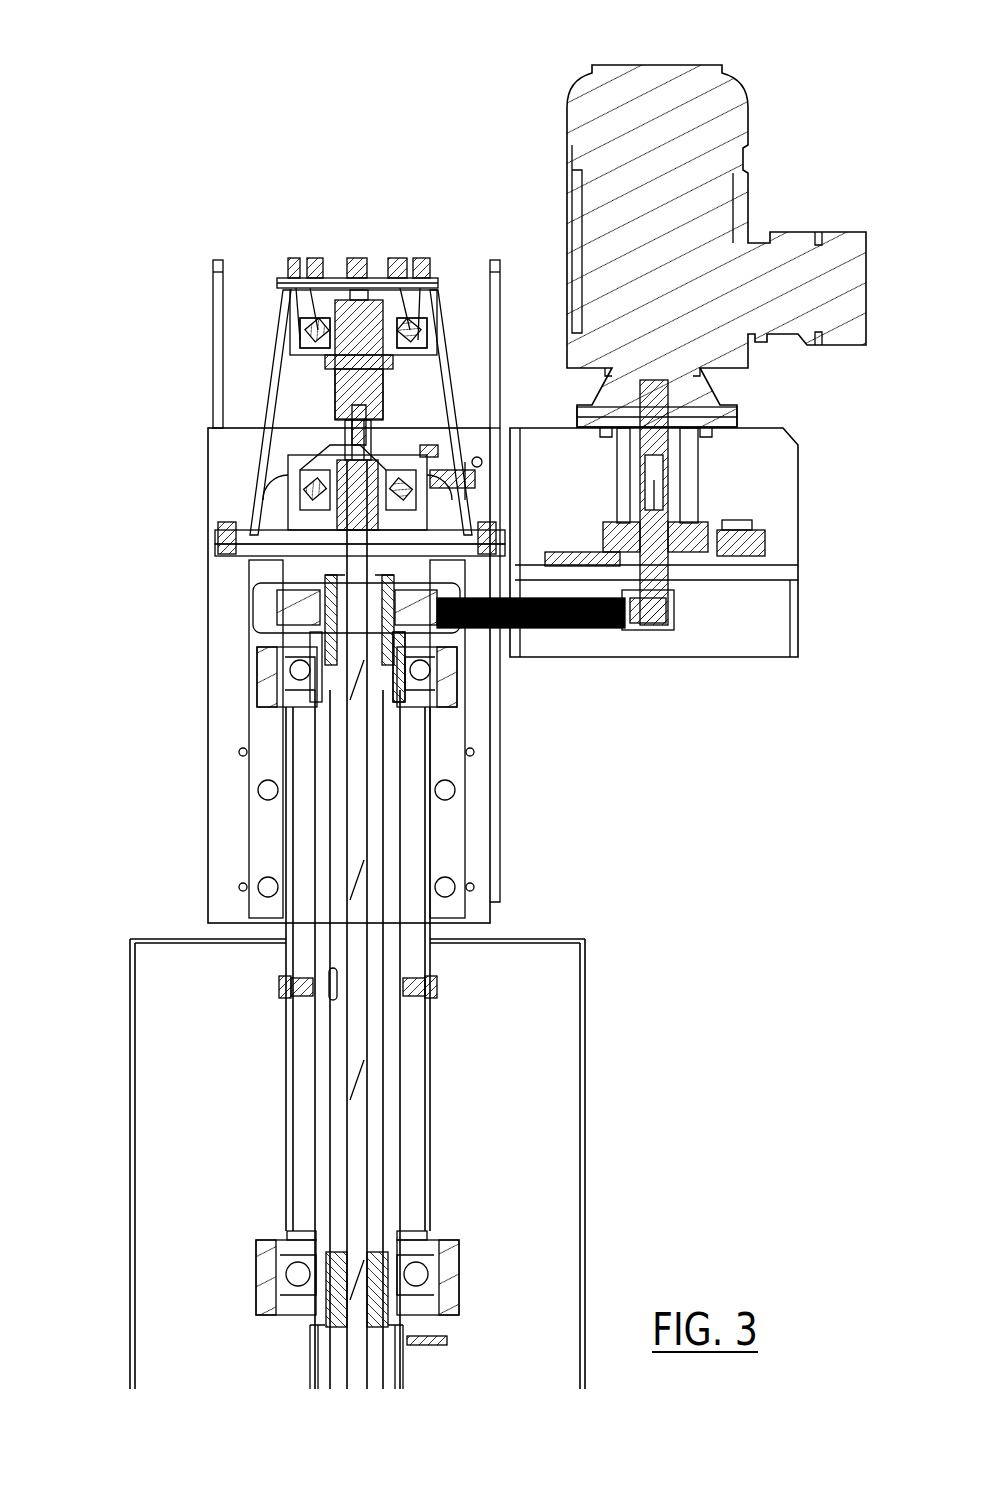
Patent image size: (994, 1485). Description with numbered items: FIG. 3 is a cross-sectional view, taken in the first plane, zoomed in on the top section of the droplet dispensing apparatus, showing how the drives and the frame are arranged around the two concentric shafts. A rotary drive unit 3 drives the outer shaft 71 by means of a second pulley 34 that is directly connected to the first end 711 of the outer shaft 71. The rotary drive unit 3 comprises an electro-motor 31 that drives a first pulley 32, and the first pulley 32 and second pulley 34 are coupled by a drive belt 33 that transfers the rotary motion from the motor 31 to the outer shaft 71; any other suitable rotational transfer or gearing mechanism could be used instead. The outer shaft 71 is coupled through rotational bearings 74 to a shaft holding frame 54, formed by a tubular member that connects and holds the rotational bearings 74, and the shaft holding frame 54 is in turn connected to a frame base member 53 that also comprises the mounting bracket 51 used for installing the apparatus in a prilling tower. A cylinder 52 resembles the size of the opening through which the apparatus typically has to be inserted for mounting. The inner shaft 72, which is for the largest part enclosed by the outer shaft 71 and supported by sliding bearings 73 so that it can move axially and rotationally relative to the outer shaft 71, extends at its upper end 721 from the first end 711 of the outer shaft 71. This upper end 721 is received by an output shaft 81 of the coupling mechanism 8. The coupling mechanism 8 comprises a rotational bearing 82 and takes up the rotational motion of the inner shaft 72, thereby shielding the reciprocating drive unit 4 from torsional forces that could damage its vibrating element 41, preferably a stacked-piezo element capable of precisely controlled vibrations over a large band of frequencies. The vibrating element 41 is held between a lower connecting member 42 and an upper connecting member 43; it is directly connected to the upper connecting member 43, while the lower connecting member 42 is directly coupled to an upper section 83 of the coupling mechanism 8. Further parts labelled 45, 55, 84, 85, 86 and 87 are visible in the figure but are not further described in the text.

The rotary drive unit 3 is at (832, 136).
The motor 31 is at (712, 157).
The first pulley 32 is at (678, 603).
The drive belt 33 is at (598, 615).
The second pulley 34 is at (288, 606).
The reciprocating drive unit 4 is at (408, 383).
The vibrating element 41 is at (340, 358).
The lower connecting member 42 is at (348, 388).
The upper connecting member 43 is at (345, 312).
The seal 45 is at (345, 438).
The mounting bracket 51 is at (213, 300).
The cylinder 52 is at (136, 1170).
The frame base member 53 is at (475, 820).
The shaft holding frame 54 is at (288, 952).
The column 55 is at (445, 298).
The coupling mechanism 8 is at (288, 481).
The output shaft 81 is at (335, 510).
The rotational bearing 82 is at (388, 453).
The upper section 83 is at (385, 462).
The tapered roller bearing 84 is at (285, 342).
The bearing cover 85 is at (313, 338).
The tapered roller bearing 86 is at (418, 340).
The flange plate 87 is at (470, 490).
The outer shaft 71 is at (390, 1172).
The first end 711 is at (393, 660).
The inner shaft 72 is at (357, 1222).
The upper end 721 is at (357, 577).
The sliding bearings 73 is at (343, 640).
The rotational bearings 74 is at (298, 675).